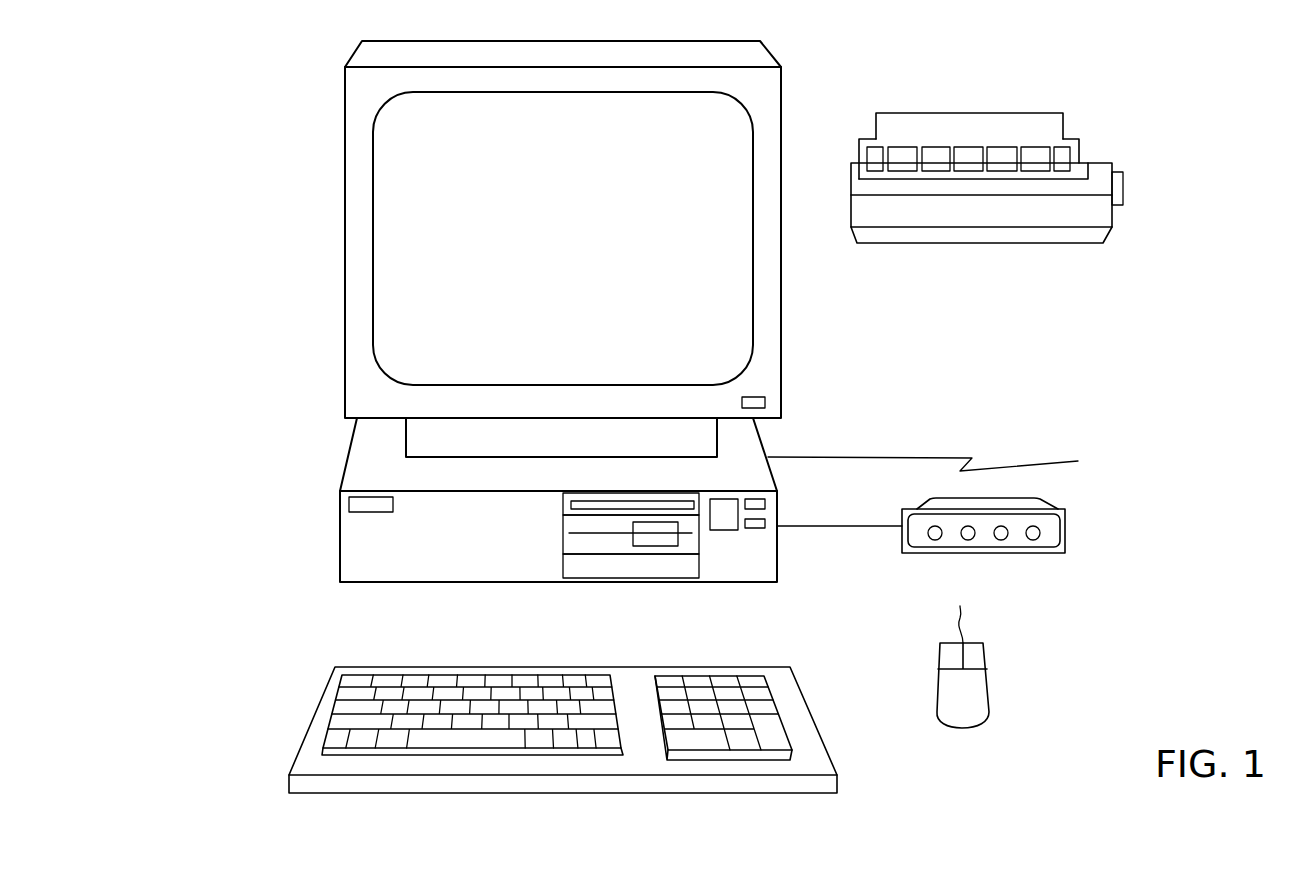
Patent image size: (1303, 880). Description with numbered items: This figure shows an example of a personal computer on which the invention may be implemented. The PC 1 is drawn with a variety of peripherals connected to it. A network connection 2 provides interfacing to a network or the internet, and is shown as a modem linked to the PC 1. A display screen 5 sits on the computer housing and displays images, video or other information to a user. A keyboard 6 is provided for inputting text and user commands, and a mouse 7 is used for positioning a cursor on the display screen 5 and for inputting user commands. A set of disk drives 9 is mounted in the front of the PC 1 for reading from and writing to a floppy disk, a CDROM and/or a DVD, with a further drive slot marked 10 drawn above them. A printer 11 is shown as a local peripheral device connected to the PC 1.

The personal computer 1 is at (262, 103).
The network connection 2 is at (1062, 452).
The display screen 5 is at (345, 212).
The keyboard 6 is at (272, 715).
The mouse 7 is at (1021, 686).
The set of disk drives 9 is at (563, 548).
The floppy disk drive 10 is at (563, 504).
The printer 11 is at (1141, 139).